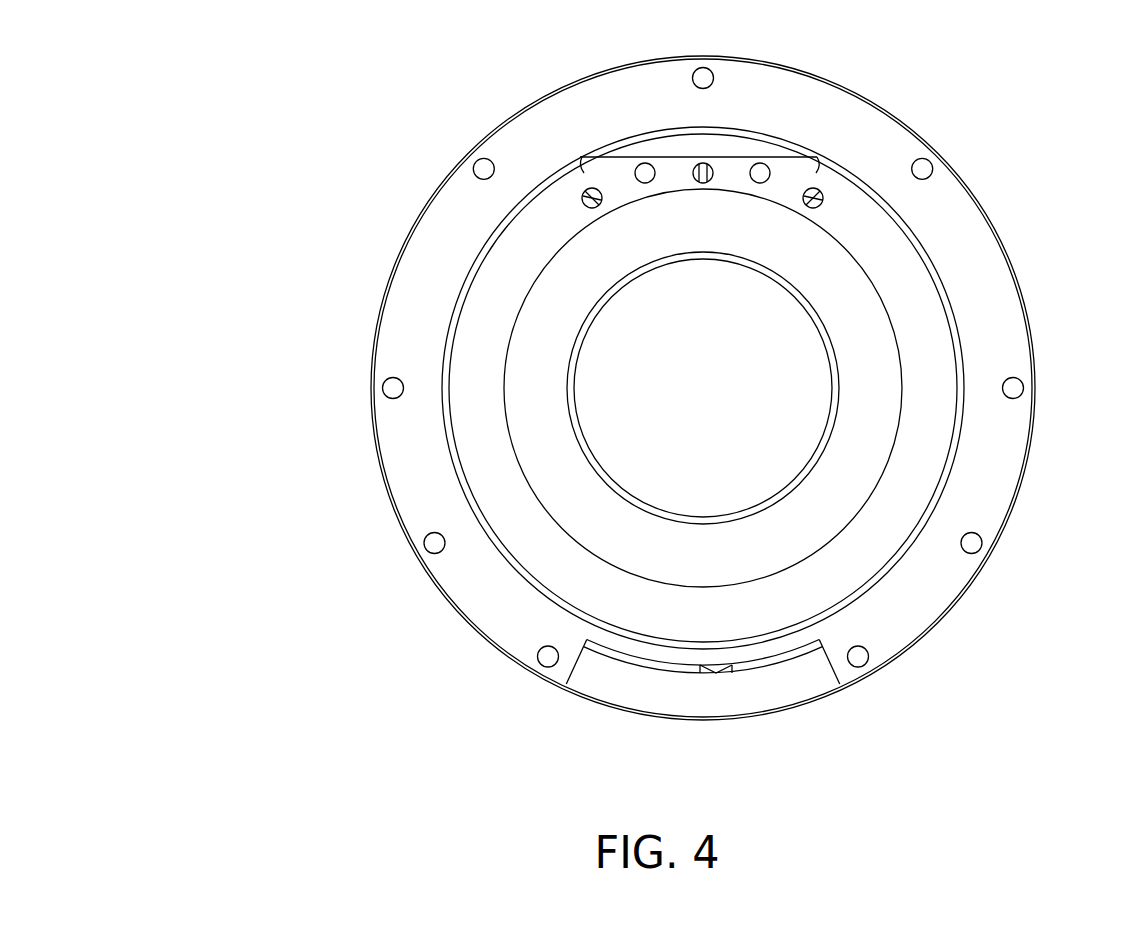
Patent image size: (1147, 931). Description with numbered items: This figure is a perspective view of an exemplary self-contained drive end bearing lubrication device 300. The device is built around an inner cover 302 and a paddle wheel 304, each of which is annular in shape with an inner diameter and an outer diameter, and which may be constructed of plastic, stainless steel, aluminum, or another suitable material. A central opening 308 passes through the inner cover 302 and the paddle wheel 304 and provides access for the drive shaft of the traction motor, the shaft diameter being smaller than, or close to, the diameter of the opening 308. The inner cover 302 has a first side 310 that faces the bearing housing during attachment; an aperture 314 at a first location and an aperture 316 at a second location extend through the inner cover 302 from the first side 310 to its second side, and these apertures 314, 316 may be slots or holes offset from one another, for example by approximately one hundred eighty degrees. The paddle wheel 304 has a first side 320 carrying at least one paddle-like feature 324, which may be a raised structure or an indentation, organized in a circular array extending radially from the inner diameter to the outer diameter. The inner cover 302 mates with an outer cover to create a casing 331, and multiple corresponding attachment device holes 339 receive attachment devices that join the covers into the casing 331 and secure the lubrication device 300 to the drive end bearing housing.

The self-contained drive end bearing lubrication device 300 is at (312, 94).
The inner cover 302 is at (430, 268).
The paddle wheel 304 is at (650, 676).
The central opening 308 is at (790, 443).
The first side 310 is at (410, 470).
The aperture 314 is at (785, 664).
The aperture 316 is at (704, 158).
The first side 320 is at (596, 660).
The paddle-like feature 324 is at (590, 198).
The casing 331 is at (1015, 262).
The attachment device holes 339 is at (1013, 388).